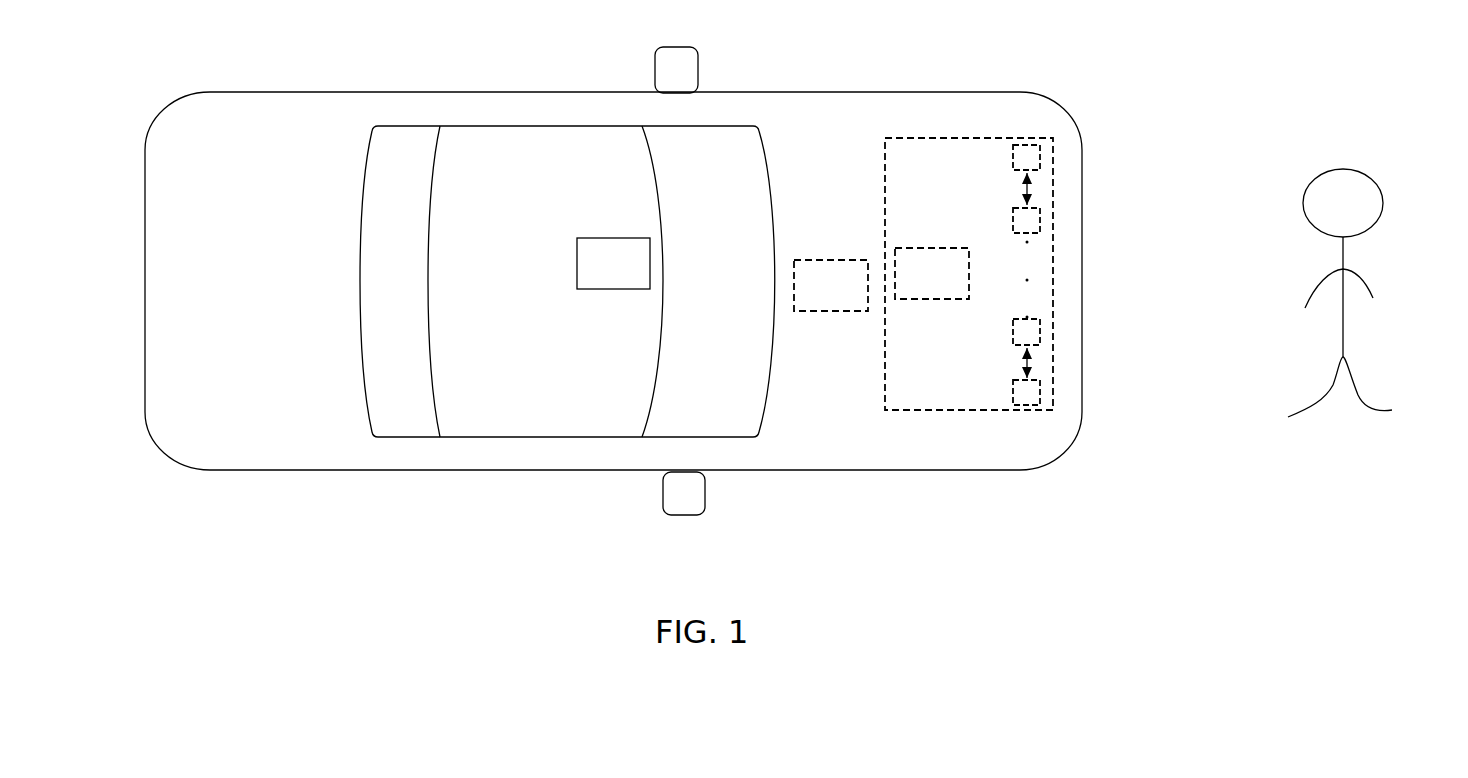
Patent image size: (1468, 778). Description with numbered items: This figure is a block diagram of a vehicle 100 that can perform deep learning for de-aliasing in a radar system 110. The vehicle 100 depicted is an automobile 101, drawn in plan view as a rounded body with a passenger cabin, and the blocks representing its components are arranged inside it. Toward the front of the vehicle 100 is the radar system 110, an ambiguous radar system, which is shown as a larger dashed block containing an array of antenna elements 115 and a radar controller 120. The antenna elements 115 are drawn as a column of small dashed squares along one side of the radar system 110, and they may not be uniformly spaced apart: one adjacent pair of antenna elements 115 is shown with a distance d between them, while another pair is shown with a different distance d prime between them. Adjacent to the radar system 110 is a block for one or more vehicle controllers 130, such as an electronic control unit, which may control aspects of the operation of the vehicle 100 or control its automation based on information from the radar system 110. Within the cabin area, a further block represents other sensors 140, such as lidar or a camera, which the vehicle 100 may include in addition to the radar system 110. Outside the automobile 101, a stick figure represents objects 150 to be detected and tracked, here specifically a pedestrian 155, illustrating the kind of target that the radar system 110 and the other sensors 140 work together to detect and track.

The vehicle 100 is at (587, 281).
The automobile 101 is at (225, 93).
The radar system 110 is at (963, 206).
The antenna elements 115 is at (1043, 215).
The radar controller 120 is at (910, 290).
The vehicle controllers 130 is at (809, 301).
The other sensors 140 is at (635, 278).
The objects 150 is at (1364, 258).
The pedestrian 155 is at (1350, 160).